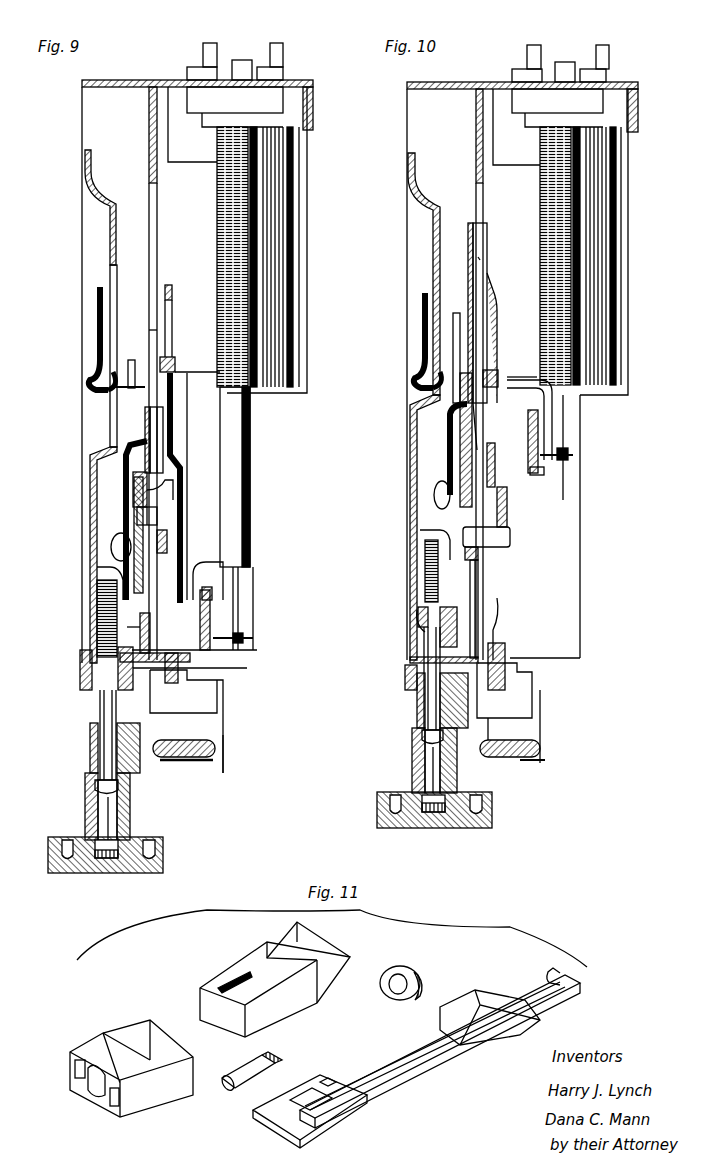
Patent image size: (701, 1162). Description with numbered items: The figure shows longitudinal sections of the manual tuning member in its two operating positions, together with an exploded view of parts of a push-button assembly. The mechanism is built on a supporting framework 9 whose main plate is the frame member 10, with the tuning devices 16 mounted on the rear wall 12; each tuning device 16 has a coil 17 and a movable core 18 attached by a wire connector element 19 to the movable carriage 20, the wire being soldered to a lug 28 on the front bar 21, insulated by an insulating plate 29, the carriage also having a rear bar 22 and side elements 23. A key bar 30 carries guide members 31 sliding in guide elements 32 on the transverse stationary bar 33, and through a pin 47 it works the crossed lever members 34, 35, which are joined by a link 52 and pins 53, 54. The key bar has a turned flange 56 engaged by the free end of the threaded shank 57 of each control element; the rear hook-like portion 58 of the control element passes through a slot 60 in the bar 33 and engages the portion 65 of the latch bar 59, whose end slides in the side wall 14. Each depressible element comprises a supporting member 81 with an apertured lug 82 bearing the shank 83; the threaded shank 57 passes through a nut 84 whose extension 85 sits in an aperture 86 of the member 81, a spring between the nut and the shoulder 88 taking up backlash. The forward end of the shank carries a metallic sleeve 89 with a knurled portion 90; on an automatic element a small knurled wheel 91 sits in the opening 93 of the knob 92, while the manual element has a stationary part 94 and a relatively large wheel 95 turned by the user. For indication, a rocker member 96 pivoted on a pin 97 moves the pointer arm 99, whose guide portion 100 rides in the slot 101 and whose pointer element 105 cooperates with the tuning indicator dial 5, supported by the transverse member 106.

In FIG. 9, the tuning indicator dial 5 is at (226, 748).
In FIG. 10, the tuning indicator dial 5 is at (538, 760).
In FIG. 9, the supporting framework 9 is at (155, 82).
In FIG. 10, the supporting framework 9 is at (492, 81).
In FIG. 9, the main frame member 10 is at (145, 600).
In FIG. 10, the main frame member 10 is at (478, 575).
In FIG. 9, the rear wall 12 is at (116, 79).
In FIG. 10, the rear wall 12 is at (474, 80).
In FIG. 10, the side wall 14 is at (582, 606).
In FIG. 9, the tuning device 16 is at (296, 236).
In FIG. 10, the tuning device 16 is at (620, 237).
In FIG. 9, the coil 17 is at (260, 292).
In FIG. 10, the coil 17 is at (600, 372).
In FIG. 9, the movable core 18 is at (236, 496).
In FIG. 9, the wire connector element 19 is at (243, 610).
In FIG. 10, the wire connector element 19 is at (565, 434).
In FIG. 9, the movable carriage 20 is at (143, 441).
In FIG. 10, the movable carriage 20 is at (478, 257).
In FIG. 9, the front bar 21 is at (245, 652).
In FIG. 10, the front bar 21 is at (535, 476).
In FIG. 9, the rear bar 22 is at (150, 418).
In FIG. 10, the rear bar 22 is at (470, 250).
In FIG. 9, the side element 23 is at (160, 430).
In FIG. 10, the side element 23 is at (490, 275).
In FIG. 9, the lug 28 is at (253, 638).
In FIG. 10, the lug 28 is at (573, 456).
In FIG. 9, the insulating plate 29 is at (210, 622).
In FIG. 10, the insulating plate 29 is at (538, 466).
In FIG. 9, the key bar 30 is at (134, 517).
In FIG. 10, the key bar 30 is at (447, 445).
In FIG. 9, the guide member 31 is at (132, 360).
In FIG. 10, the guide member 31 is at (453, 313).
In FIG. 9, the guide element 32 is at (140, 378).
In FIG. 9, the transverse stationary bar 33 is at (100, 316).
In FIG. 10, the transverse stationary bar 33 is at (425, 325).
In FIG. 9, the crossed lever member 34 is at (112, 540).
In FIG. 10, the crossed lever member 34 is at (463, 470).
In FIG. 9, the crossed lever member 35 is at (140, 627).
In FIG. 9, the pin 47 is at (163, 540).
In FIG. 10, the pin 47 is at (492, 500).
In FIG. 9, the link 52 is at (135, 500).
In FIG. 10, the link 52 is at (473, 443).
In FIG. 9, the pin 53 is at (160, 500).
In FIG. 9, the pin 54 is at (180, 620).
In FIG. 10, the pin 54 is at (512, 537).
In FIG. 9, the turned flange 56 is at (100, 570).
In FIG. 10, the turned flange 56 is at (425, 530).
In FIG. 9, the threaded shank 57 is at (100, 593).
In FIG. 10, the threaded shank 57 is at (427, 548).
In FIG. 11, the hook-like portion 58 is at (560, 983).
In FIG. 9, the latch bar 59 is at (110, 215).
In FIG. 10, the latch bar 59 is at (433, 215).
In FIG. 9, the slot 60 is at (102, 392).
In FIG. 10, the slot 60 is at (430, 390).
In FIG. 9, the latch bar portion 65 is at (115, 306).
In FIG. 9, the supporting member 81 is at (93, 500).
In FIG. 10, the supporting member 81 is at (412, 486).
In FIG. 11, the supporting member 81 is at (385, 1105).
In FIG. 9, the apertured lug 82 is at (92, 724).
In FIG. 10, the apertured lug 82 is at (406, 668).
In FIG. 9, the shank 83 is at (104, 700).
In FIG. 10, the shank 83 is at (426, 643).
In FIG. 9, the nut 84 is at (83, 657).
In FIG. 10, the nut 84 is at (420, 612).
In FIG. 9, the extension 85 is at (193, 668).
In FIG. 10, the extension 85 is at (457, 625).
In FIG. 10, the aperture 86 is at (480, 612).
In FIG. 11, the aperture 86 is at (330, 1080).
In FIG. 10, the shoulder 88 is at (415, 610).
In FIG. 9, the metallic sleeve 89 is at (103, 808).
In FIG. 10, the metallic sleeve 89 is at (430, 768).
In FIG. 11, the metallic sleeve 89 is at (248, 1082).
In FIG. 9, the knurled portion 90 is at (98, 873).
In FIG. 10, the knurled portion 90 is at (437, 828).
In FIG. 11, the knurled portion 90 is at (275, 1057).
In FIG. 11, the knurled wheel 91 is at (420, 980).
In FIG. 11, the knob 92 is at (250, 960).
In FIG. 11, the opening 93 is at (240, 982).
In FIG. 9, the stationary part 94 is at (130, 815).
In FIG. 10, the stationary part 94 is at (458, 780).
In FIG. 11, the stationary part 94 is at (135, 1035).
In FIG. 9, the wheel 95 is at (163, 857).
In FIG. 10, the wheel 95 is at (492, 828).
In FIG. 9, the rocker member 96 is at (176, 562).
In FIG. 10, the rocker member 96 is at (508, 513).
In FIG. 9, the pin 97 is at (180, 664).
In FIG. 10, the pin 97 is at (520, 670).
In FIG. 9, the pointer arm 99 is at (186, 532).
In FIG. 9, the guide portion 100 is at (172, 360).
In FIG. 10, the guide portion 100 is at (492, 370).
In FIG. 9, the slot 101 is at (172, 292).
In FIG. 9, the pointer element 105 is at (195, 762).
In FIG. 9, the transverse member 106 is at (195, 740).
In FIG. 10, the transverse member 106 is at (525, 742).